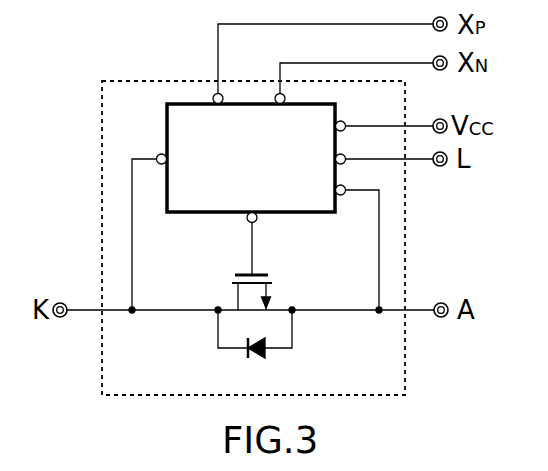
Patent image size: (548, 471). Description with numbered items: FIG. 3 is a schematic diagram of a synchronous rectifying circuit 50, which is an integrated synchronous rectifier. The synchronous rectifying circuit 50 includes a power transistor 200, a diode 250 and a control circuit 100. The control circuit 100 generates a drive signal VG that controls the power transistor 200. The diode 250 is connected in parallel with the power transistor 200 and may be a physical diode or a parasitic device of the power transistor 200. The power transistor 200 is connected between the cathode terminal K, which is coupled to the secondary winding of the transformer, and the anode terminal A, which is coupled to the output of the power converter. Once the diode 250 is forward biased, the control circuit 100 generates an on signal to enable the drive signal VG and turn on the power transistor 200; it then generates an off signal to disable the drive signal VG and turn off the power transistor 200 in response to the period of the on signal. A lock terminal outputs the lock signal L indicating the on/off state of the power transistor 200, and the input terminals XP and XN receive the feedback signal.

The synchronous rectifying circuit 50 is at (116, 81).
The control circuit 100 is at (207, 215).
The power transistor 200 is at (272, 296).
The diode 250 is at (255, 360).